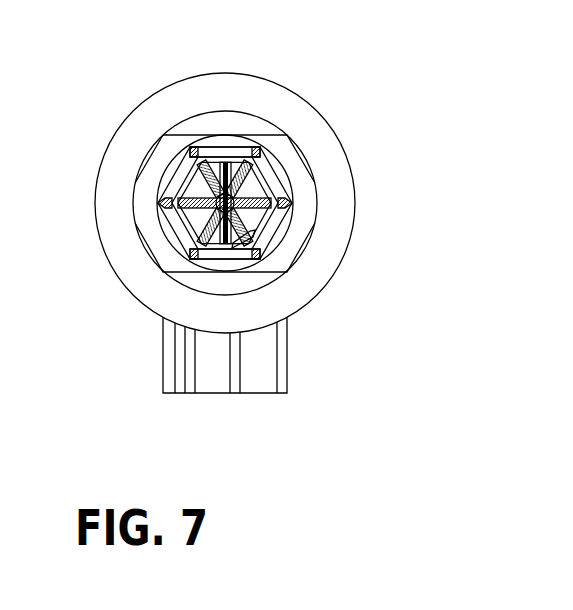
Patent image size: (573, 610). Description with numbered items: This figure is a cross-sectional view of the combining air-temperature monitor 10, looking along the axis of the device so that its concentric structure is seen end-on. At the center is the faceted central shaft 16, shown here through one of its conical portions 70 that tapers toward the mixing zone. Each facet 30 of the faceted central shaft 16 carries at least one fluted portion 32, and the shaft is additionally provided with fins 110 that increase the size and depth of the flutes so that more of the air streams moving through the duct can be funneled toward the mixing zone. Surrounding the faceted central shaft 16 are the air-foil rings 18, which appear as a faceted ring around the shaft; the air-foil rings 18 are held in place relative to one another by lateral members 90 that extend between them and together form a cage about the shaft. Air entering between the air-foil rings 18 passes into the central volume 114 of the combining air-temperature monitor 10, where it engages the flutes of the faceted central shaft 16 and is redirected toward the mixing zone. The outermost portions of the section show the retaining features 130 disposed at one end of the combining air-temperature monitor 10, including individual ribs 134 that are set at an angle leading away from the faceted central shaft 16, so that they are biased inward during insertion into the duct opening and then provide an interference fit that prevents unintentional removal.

The combining air-temperature monitor 10 is at (140, 70).
The faceted central shaft 16 is at (236, 193).
The air-foil rings 18 is at (228, 150).
The facet 30 is at (248, 213).
The fluted portion 32 is at (200, 217).
The conical portion 70 is at (193, 183).
The lateral members 90 is at (253, 148).
The fins 110 is at (263, 232).
The central volume 114 is at (208, 258).
The retaining features 130 is at (125, 188).
The ribs 134 is at (305, 208).